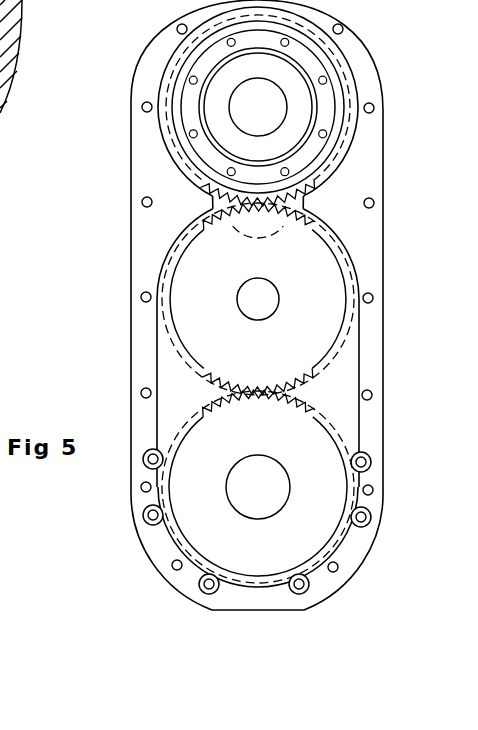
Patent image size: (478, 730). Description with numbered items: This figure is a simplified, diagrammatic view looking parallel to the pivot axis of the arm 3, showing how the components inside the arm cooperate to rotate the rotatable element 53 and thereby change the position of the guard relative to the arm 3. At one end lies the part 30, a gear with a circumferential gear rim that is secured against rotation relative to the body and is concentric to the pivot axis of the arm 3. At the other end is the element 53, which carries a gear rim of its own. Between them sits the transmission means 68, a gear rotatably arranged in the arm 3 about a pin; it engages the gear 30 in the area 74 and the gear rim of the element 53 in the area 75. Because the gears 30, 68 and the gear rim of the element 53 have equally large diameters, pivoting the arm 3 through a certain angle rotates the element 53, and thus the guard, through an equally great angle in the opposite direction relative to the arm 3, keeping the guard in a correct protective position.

The arm 3 is at (130, 275).
The element 53 is at (203, 177).
The engagement area 75 is at (211, 205).
The transmission means 68 is at (187, 315).
The engagement area 74 is at (207, 398).
The part 30 is at (190, 515).